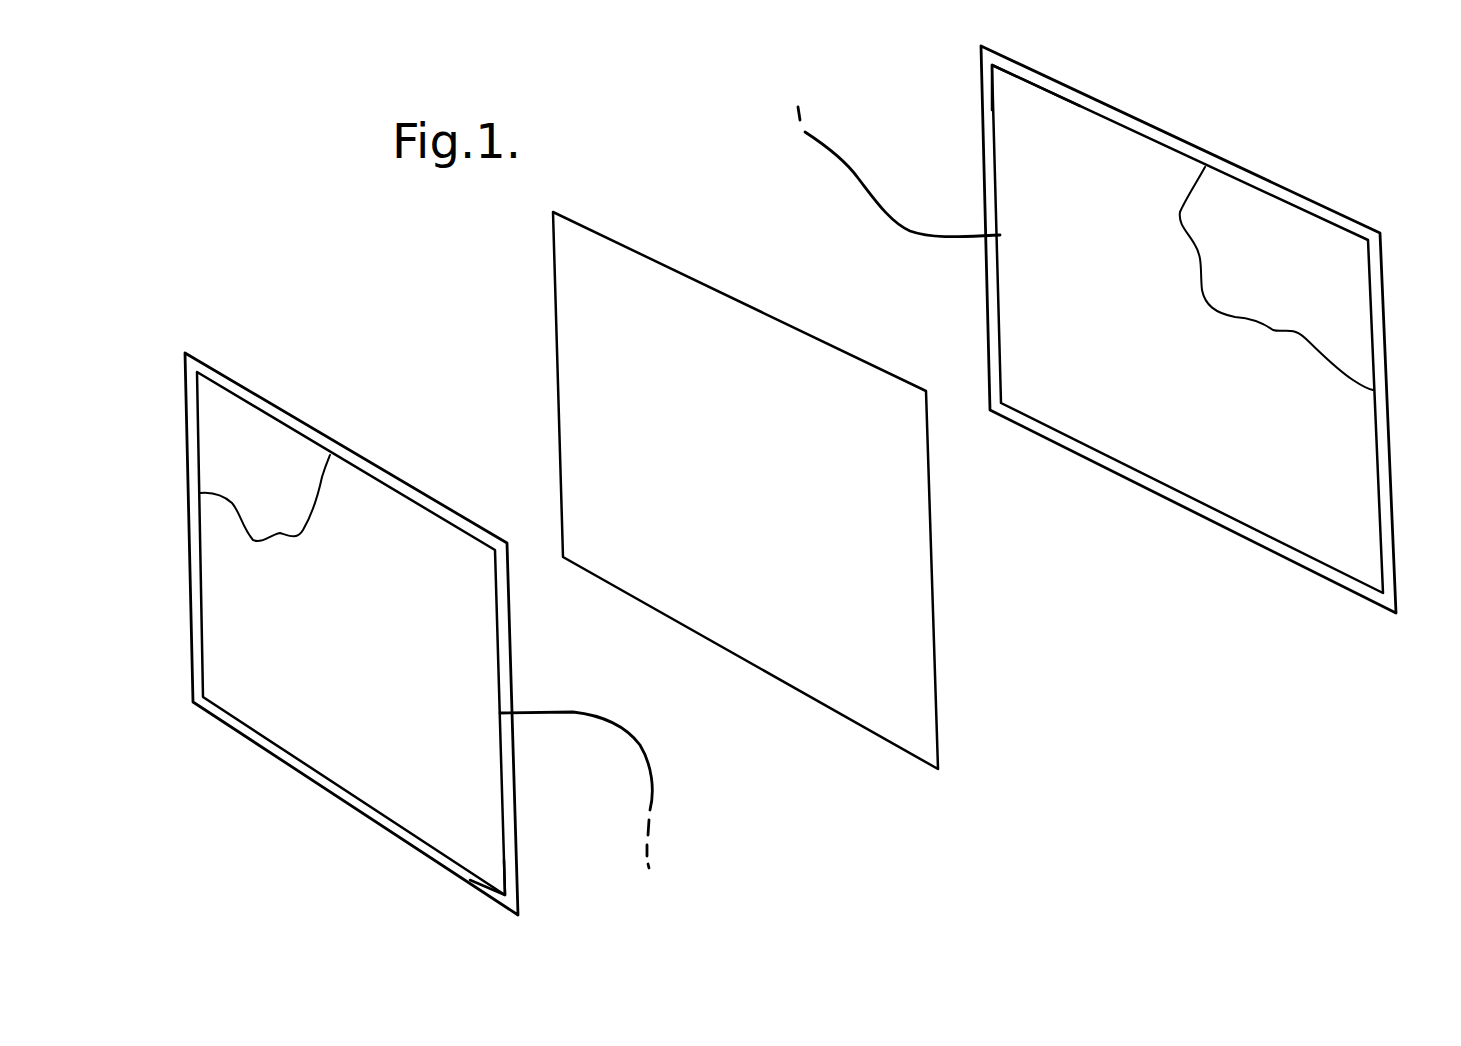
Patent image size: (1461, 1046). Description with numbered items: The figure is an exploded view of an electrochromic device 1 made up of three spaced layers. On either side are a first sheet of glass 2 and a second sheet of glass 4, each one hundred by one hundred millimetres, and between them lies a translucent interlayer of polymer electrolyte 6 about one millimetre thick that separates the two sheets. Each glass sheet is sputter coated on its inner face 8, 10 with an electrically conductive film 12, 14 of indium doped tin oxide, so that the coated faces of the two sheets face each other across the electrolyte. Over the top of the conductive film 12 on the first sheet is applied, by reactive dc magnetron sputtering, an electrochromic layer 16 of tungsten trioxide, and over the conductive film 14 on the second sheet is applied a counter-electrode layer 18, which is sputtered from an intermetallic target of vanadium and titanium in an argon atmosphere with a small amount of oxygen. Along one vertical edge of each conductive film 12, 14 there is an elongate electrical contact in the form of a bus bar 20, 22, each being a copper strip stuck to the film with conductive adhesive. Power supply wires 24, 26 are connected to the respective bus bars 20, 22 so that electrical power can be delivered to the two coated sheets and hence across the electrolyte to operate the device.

The electrochromic device 1 is at (1050, 742).
The first sheet of glass 2 is at (1388, 378).
The second sheet of glass 4 is at (243, 386).
The translucent interlayer of polymer electrolyte 6 is at (735, 488).
The inner face of first sheet 8 is at (1225, 542).
The inner face of second sheet 10 is at (400, 462).
The electrically conductive film 12 is at (1283, 280).
The electrically conductive film 14 is at (344, 658).
The electrochromic layer 16 is at (1128, 371).
The counter-electrode layer 18 is at (264, 473).
The bus bar 20 is at (1000, 147).
The bus bar 22 is at (500, 852).
The power supply wire 24 is at (856, 172).
The power supply wire 26 is at (655, 805).